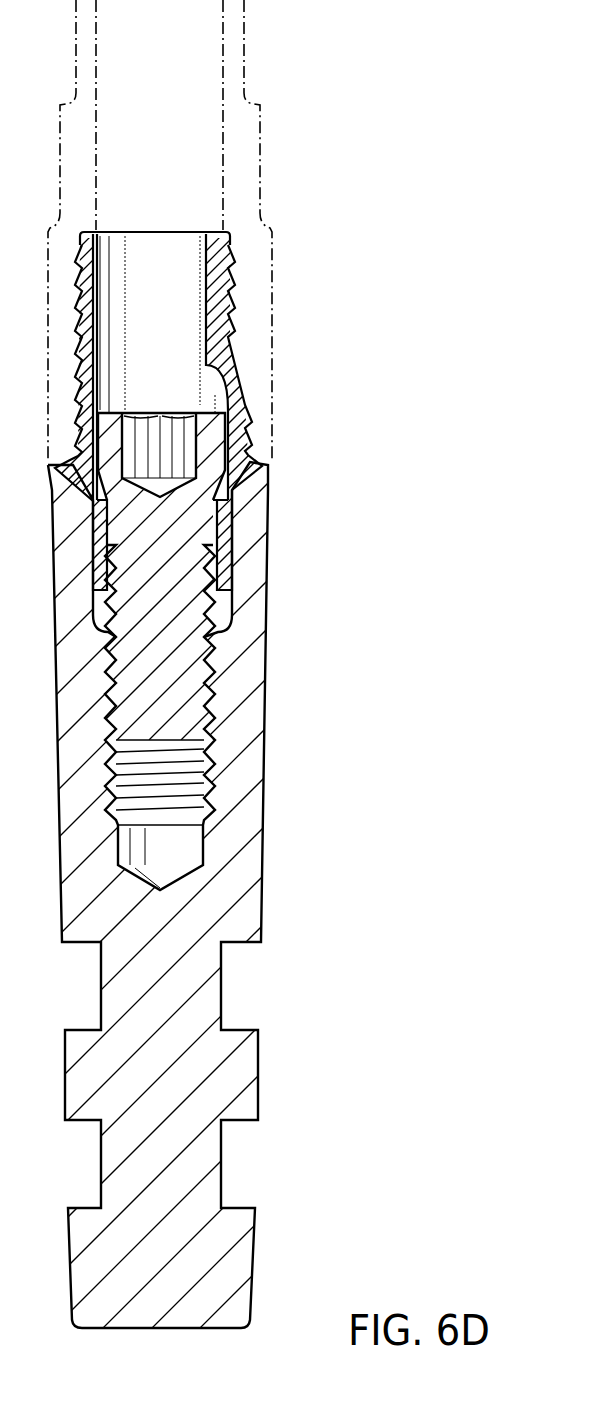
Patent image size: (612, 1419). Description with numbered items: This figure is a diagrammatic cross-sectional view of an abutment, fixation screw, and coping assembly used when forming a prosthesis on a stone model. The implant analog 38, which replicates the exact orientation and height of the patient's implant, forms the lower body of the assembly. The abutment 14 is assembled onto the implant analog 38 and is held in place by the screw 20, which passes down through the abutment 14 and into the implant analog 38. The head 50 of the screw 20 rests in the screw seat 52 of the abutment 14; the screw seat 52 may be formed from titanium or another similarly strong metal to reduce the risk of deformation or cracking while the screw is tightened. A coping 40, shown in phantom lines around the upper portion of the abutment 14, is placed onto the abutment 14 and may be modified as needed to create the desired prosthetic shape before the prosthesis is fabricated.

The coping 40 is at (242, 58).
The abutment 14 is at (154, 242).
The head 50 is at (210, 447).
The screw seat 52 is at (228, 530).
The screw 20 is at (270, 651).
The implant analog 38 is at (253, 756).